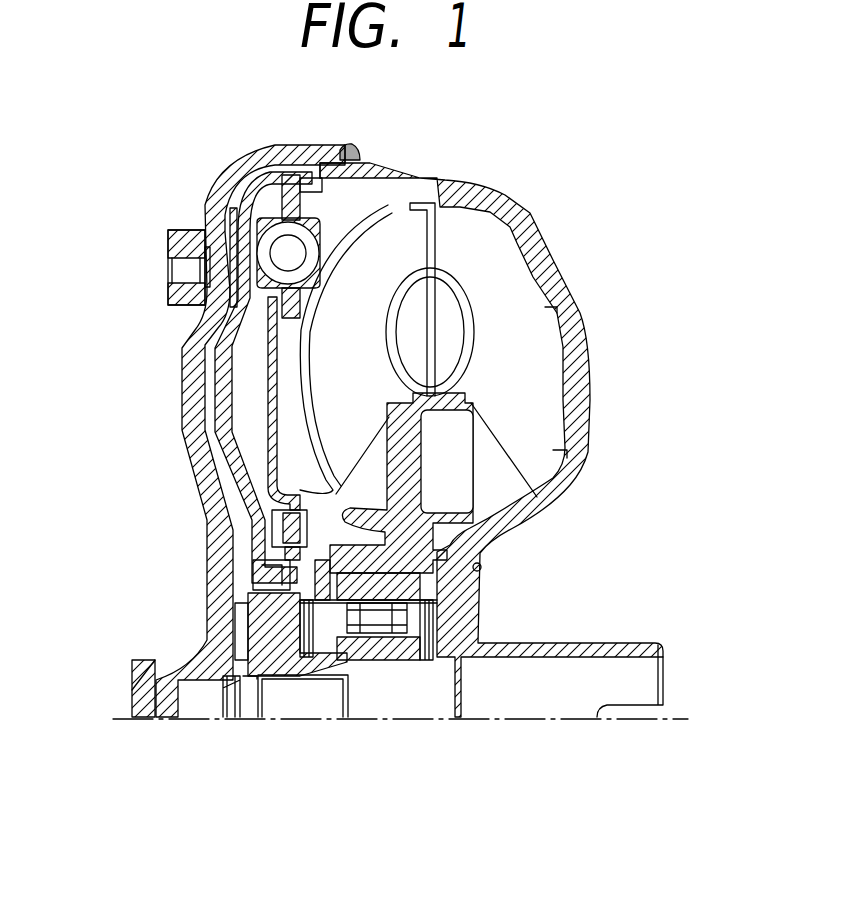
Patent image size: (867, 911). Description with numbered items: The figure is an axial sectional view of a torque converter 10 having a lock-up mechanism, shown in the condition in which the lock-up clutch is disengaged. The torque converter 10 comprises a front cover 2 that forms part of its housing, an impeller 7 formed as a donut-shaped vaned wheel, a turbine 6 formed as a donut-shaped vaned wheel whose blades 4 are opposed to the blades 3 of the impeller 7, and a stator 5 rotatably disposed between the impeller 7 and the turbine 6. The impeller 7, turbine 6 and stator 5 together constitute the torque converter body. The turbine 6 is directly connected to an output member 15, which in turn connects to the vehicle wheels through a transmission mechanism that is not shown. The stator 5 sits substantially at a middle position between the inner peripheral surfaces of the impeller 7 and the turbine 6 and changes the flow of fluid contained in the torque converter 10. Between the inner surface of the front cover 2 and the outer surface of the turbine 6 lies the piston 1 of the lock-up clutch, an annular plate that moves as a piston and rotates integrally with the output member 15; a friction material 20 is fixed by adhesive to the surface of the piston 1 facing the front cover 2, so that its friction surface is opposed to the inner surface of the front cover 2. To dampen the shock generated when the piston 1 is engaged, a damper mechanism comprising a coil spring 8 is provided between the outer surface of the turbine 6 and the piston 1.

The piston 1 is at (226, 344).
The front cover 2 is at (192, 428).
The blades 3 is at (517, 275).
The blades 4 is at (397, 230).
The stator 5 is at (458, 479).
The turbine 6 is at (319, 334).
The impeller 7 is at (594, 408).
The coil spring 8 is at (237, 146).
The torque converter 10 is at (603, 142).
The output member 15 is at (298, 667).
The friction material 20 is at (222, 229).